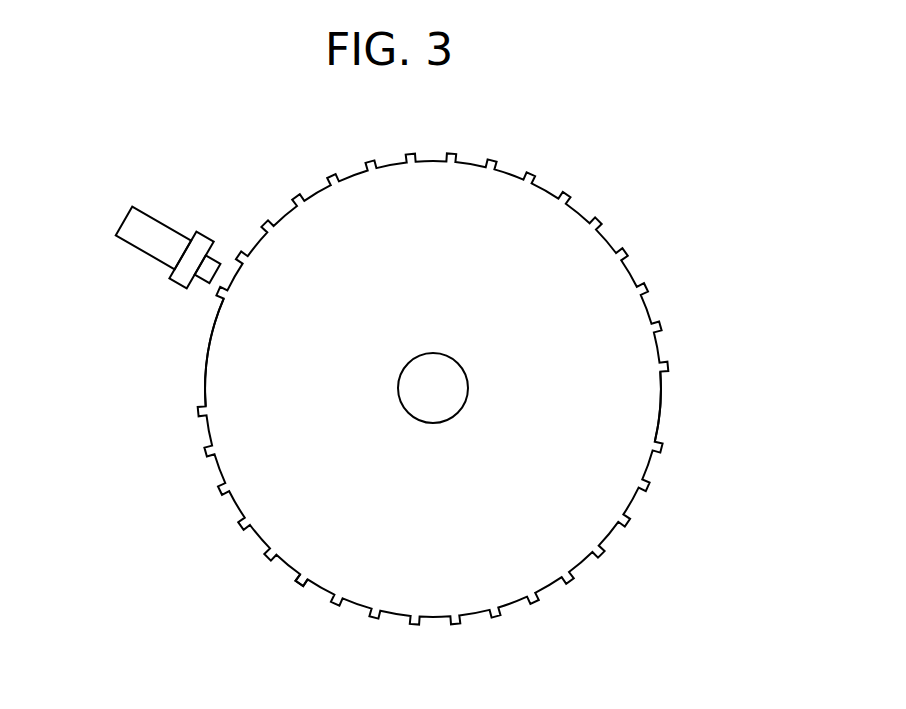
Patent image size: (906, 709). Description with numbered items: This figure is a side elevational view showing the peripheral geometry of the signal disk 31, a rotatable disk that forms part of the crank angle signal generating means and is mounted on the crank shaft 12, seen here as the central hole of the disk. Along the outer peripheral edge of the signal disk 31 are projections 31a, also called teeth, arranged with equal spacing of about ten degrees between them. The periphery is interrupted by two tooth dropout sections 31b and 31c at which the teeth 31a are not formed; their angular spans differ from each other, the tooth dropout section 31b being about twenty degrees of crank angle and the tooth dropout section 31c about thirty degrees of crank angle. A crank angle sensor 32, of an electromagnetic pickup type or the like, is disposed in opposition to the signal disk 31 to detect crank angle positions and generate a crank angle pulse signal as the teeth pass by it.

The crank shaft 12 is at (453, 357).
The signal disk 31 is at (241, 507).
The projections 31a is at (302, 588).
The tooth dropout section 31b is at (662, 403).
The tooth dropout section 31c is at (207, 358).
The crank angle sensor 32 is at (138, 248).